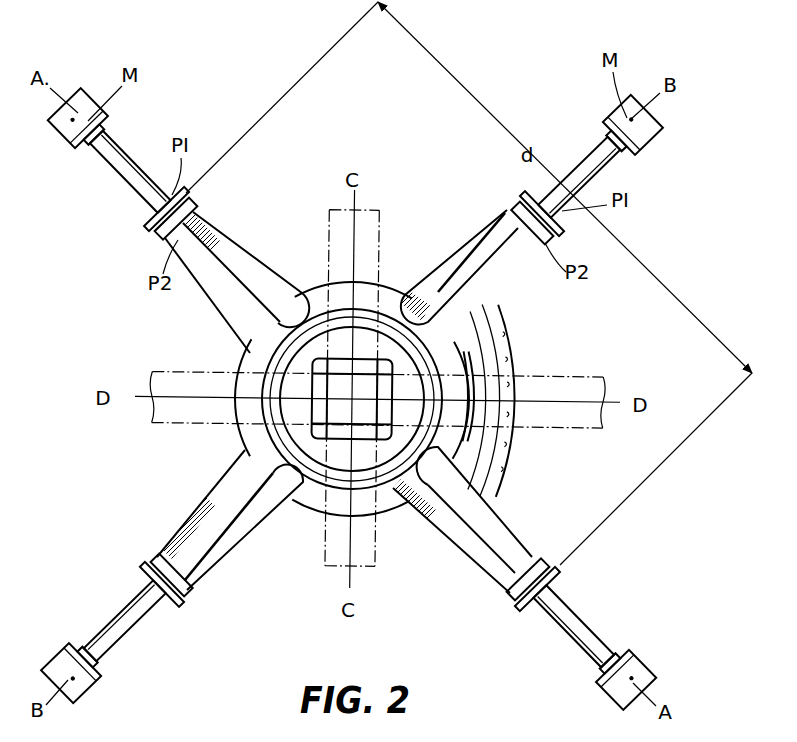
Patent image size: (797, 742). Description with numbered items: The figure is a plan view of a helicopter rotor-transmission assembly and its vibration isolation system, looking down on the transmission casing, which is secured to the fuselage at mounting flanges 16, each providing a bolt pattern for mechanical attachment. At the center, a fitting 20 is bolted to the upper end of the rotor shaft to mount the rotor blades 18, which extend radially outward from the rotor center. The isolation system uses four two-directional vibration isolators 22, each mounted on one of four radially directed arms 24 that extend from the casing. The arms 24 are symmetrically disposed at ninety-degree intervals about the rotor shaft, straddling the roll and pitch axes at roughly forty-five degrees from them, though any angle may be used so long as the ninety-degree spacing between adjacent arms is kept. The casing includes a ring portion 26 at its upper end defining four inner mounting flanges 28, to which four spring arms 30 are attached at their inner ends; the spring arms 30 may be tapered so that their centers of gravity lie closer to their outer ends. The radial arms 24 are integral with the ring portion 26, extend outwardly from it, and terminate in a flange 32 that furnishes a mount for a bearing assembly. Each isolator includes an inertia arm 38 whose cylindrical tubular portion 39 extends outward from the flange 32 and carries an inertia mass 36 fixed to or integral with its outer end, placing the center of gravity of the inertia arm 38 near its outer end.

The mounting flange 16 is at (525, 600).
The rotor blade 18 is at (375, 545).
The fitting 20 is at (333, 362).
The two-directional vibration isolator 22 is at (138, 140).
The radially directed arm 24 is at (522, 520).
The ring portion 26 is at (380, 285).
The inner mounting flange 28 is at (292, 293).
The spring arm 30 is at (225, 520).
The flange 32 is at (191, 203).
The inertia mass 36 is at (635, 665).
The inertia arm 38 is at (129, 643).
The cylindrical tubular portion 39 is at (575, 612).